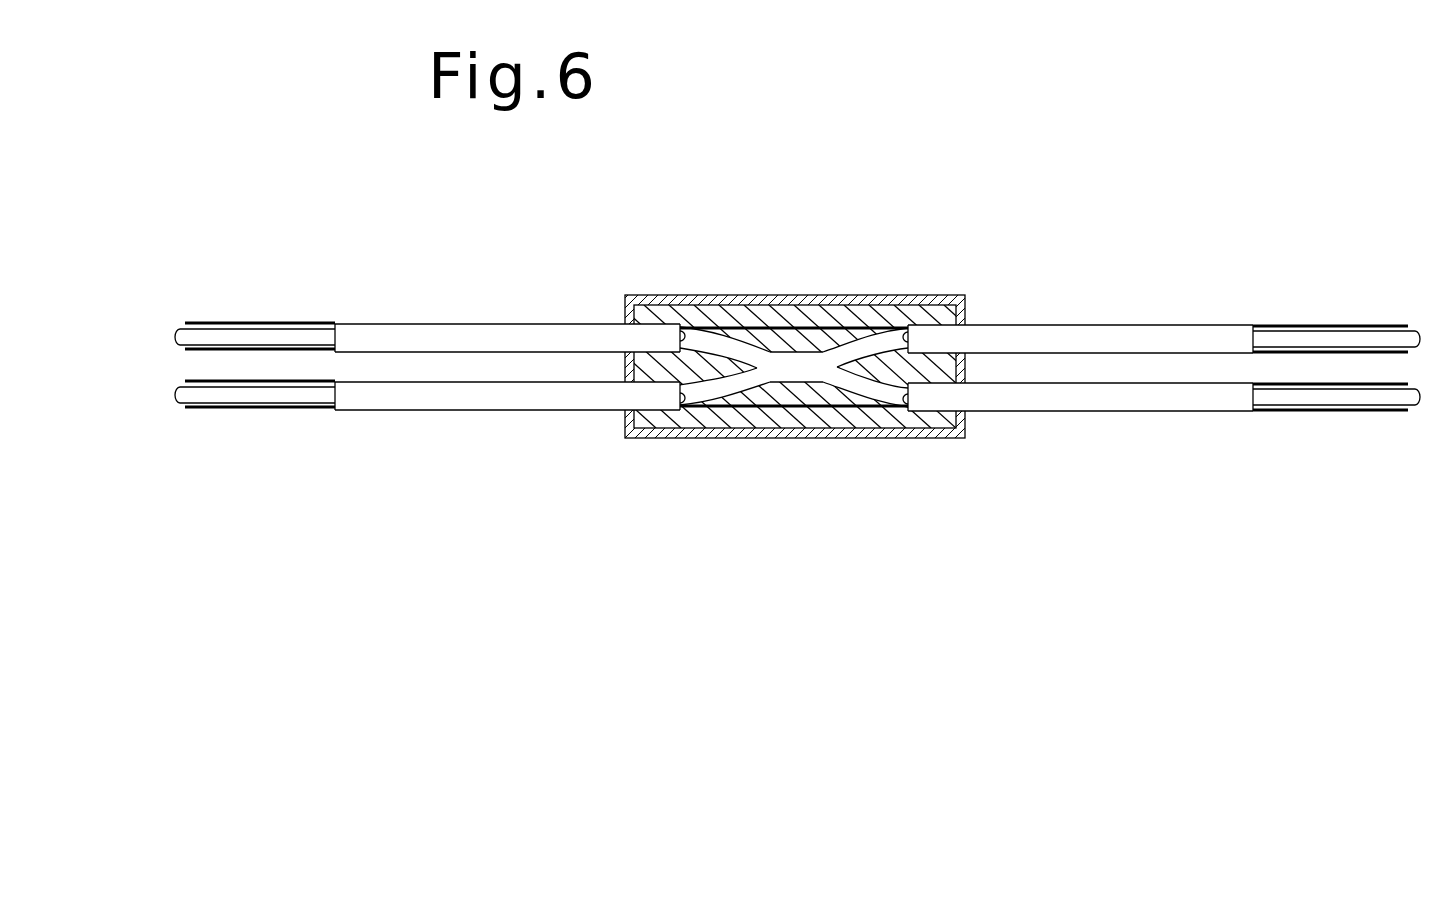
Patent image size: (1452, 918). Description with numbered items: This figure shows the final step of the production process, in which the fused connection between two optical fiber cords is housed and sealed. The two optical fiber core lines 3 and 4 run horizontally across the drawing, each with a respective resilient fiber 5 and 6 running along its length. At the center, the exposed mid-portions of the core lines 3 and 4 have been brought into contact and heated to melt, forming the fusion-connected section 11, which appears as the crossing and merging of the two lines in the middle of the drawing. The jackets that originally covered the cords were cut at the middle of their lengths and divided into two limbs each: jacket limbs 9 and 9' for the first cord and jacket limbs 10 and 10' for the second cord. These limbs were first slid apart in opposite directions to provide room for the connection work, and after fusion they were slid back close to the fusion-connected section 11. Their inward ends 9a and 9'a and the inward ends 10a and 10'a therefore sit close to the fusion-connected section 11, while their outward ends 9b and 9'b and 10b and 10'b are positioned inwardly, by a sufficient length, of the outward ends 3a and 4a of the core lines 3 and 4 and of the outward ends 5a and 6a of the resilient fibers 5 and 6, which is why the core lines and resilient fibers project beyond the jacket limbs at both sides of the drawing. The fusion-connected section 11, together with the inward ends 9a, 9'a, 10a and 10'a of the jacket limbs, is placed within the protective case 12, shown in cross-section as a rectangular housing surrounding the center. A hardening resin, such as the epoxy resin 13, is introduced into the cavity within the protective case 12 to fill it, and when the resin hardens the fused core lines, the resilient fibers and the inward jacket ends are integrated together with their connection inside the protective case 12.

The optical fiber core line 3 is at (708, 337).
The optical fiber core line 4 is at (706, 400).
The resilient fiber 5 is at (848, 327).
The resilient fiber 6 is at (820, 408).
The outward end of optical fiber core line 3a is at (200, 328).
The outward end of optical fiber core line 4a is at (183, 405).
The outward end of resilient fiber 5a is at (226, 321).
The outward end of resilient fiber 6a is at (210, 409).
The jacket limb 9 is at (507, 296).
The inward end of jacket limb 9a is at (706, 338).
The outward end of jacket limb 9b is at (331, 323).
The jacket limb 9' is at (1080, 286).
The inward end of jacket limb 9'a is at (961, 285).
The outward end of jacket limb 9'b is at (1260, 295).
The jacket limb 10 is at (507, 464).
The inward end of jacket limb 10a is at (685, 410).
The outward end of jacket limb 10b is at (315, 405).
The jacket limb 10' is at (1080, 462).
The inward end of jacket limb 10'a is at (949, 465).
The outward end of jacket limb 10'b is at (1257, 449).
The fusion-connected section 11 is at (792, 356).
The protective case 12 is at (905, 300).
The epoxy resin 13 is at (862, 430).